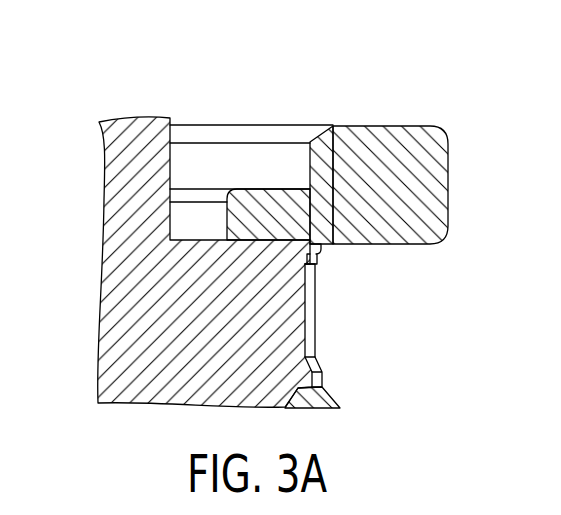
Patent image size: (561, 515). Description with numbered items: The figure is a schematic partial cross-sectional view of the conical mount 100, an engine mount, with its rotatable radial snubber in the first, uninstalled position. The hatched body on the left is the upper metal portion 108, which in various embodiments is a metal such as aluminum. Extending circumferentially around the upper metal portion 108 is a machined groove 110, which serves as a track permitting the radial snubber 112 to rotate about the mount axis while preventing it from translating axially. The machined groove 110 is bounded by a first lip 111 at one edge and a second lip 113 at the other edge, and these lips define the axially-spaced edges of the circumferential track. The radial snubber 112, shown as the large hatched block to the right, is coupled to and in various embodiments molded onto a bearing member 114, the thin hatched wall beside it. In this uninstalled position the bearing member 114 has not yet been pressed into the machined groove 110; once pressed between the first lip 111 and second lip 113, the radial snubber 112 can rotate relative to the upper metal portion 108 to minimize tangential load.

The conical mount 100 is at (128, 104).
The upper metal portion 108 is at (118, 283).
The machined groove 110 is at (309, 306).
The first lip 111 is at (320, 258).
The radial snubber 112 is at (397, 140).
The second lip 113 is at (313, 362).
The bearing member 114 is at (324, 140).